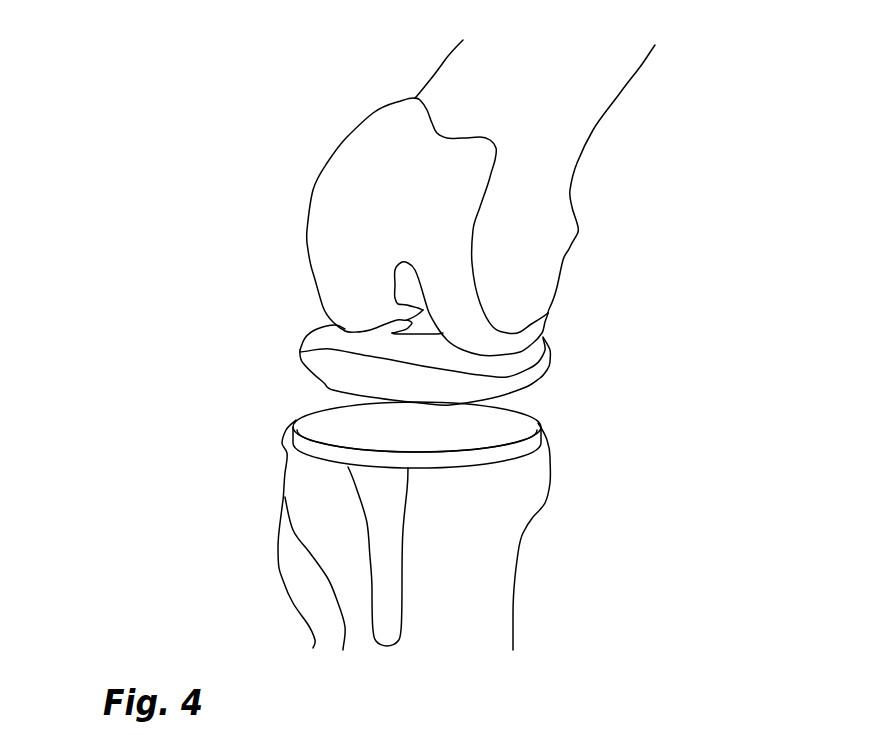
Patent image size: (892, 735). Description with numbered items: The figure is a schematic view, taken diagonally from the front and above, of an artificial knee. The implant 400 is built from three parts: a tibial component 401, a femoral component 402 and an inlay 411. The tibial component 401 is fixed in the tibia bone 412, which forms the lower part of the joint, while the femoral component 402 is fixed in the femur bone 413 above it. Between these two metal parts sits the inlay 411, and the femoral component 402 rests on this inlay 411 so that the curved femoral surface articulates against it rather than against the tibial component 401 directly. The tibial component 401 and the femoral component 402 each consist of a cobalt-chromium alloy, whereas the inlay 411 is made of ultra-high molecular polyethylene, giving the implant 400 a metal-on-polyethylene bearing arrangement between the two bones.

The implant 400 is at (252, 184).
The tibial component 401 is at (396, 526).
The femoral component 402 is at (348, 254).
The inlay 411 is at (514, 381).
The tibia bone 412 is at (328, 520).
The femur bone 413 is at (546, 142).